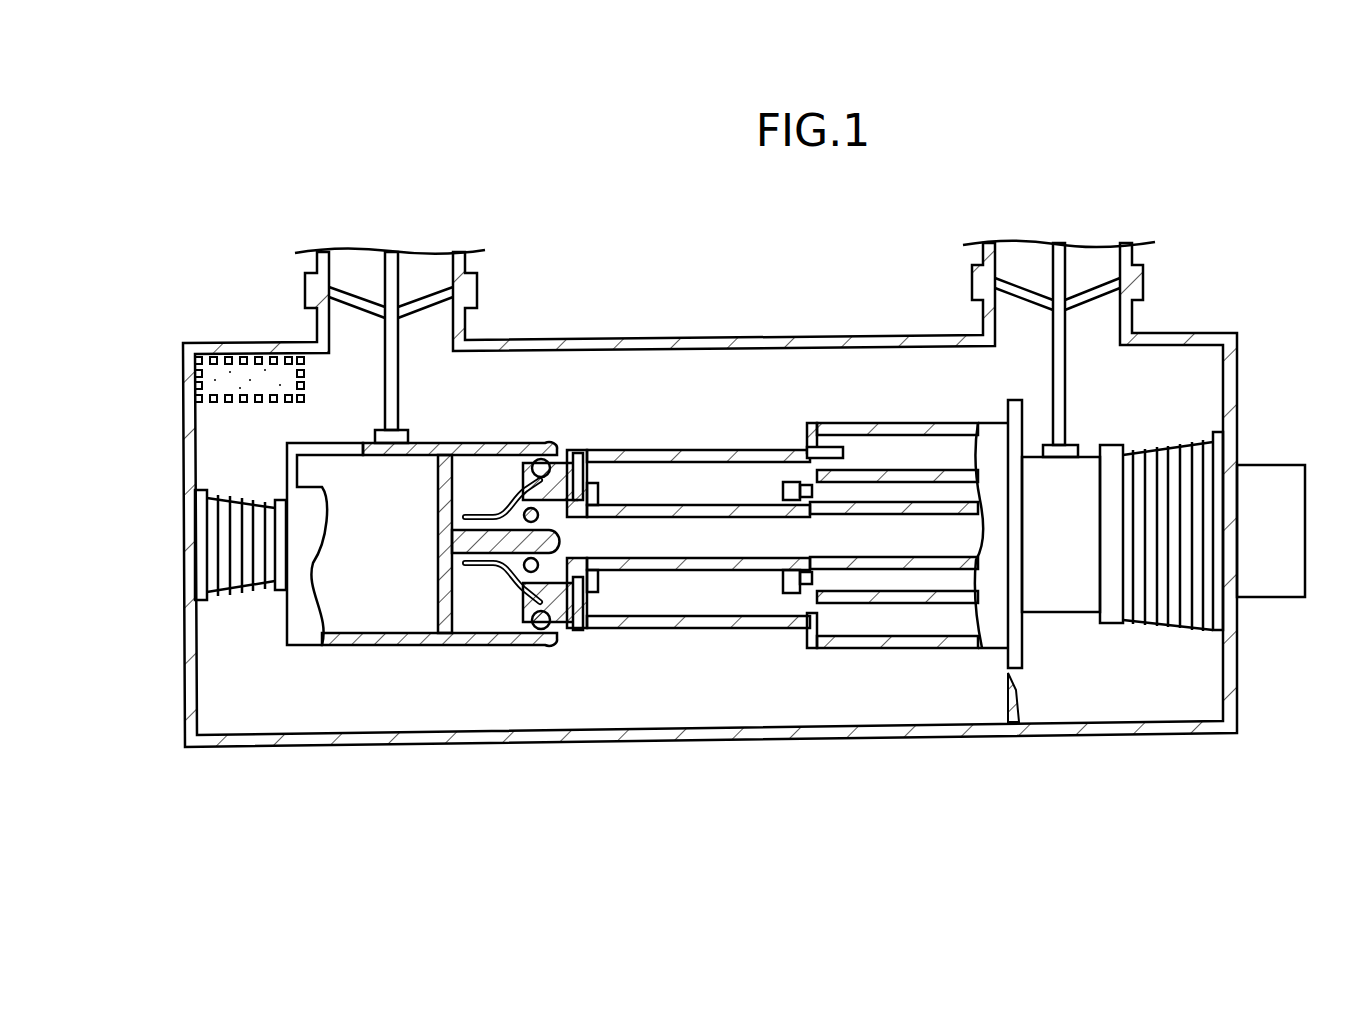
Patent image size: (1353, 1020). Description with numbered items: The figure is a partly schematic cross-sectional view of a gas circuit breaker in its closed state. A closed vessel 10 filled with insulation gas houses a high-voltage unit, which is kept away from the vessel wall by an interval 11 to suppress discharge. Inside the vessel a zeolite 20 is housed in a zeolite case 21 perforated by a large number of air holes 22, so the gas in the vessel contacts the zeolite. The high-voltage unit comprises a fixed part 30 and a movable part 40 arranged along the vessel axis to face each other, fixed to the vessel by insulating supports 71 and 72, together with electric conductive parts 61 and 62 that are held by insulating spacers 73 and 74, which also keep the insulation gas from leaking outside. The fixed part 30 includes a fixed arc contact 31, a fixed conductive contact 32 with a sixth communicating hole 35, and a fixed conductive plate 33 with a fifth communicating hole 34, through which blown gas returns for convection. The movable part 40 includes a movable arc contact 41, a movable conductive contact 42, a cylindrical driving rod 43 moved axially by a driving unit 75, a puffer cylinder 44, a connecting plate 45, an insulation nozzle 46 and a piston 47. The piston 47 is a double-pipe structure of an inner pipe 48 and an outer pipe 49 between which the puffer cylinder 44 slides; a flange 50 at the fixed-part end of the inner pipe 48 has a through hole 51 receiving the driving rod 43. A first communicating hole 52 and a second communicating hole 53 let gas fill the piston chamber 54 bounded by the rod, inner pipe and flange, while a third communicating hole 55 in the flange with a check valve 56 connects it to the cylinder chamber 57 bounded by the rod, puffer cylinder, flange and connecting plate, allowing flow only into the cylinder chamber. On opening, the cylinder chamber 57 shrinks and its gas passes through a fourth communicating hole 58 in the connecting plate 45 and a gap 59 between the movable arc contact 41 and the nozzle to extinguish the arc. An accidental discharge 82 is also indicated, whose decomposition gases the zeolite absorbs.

The closed vessel 10 is at (308, 741).
The interval 11 is at (337, 712).
The zeolite 20 is at (240, 378).
The zeolite case 21 is at (197, 373).
The air holes 22 is at (240, 403).
The fixed part 30 is at (410, 697).
The fixed arc contact 31 is at (530, 648).
The fixed conductive contact 32 is at (497, 648).
The fixed conductive plate 33 is at (445, 648).
The fifth communicating hole 34 is at (447, 456).
The sixth communicating hole 35 is at (335, 442).
The movable part 40 is at (835, 690).
The movable arc contact 41 is at (519, 462).
The movable conductive contact 42 is at (543, 458).
The driving rod 43 is at (744, 512).
The puffer cylinder 44 is at (694, 449).
The connecting plate 45 is at (578, 452).
The insulation nozzle 46 is at (495, 482).
The piston 47 is at (879, 400).
The inner pipe 48 is at (852, 476).
The outer pipe 49 is at (903, 428).
The flange 50 is at (806, 456).
The through hole 51 is at (813, 562).
The first communicating hole 52 is at (942, 600).
The second communicating hole 53 is at (933, 645).
The piston chamber 54 is at (890, 650).
The third communicating hole 55 is at (806, 602).
The check valve 56 is at (795, 594).
The cylinder chamber 57 is at (693, 597).
The fourth communicating hole 58 is at (583, 602).
The gap 59 is at (560, 622).
The electric conductive part 61 is at (391, 262).
The electric conductive part 62 is at (1059, 254).
The support 71 is at (236, 575).
The support 72 is at (1175, 612).
The spacer 73 is at (348, 300).
The spacer 74 is at (1018, 283).
The driving unit 75 is at (1278, 592).
The accidental discharge 82 is at (1020, 697).